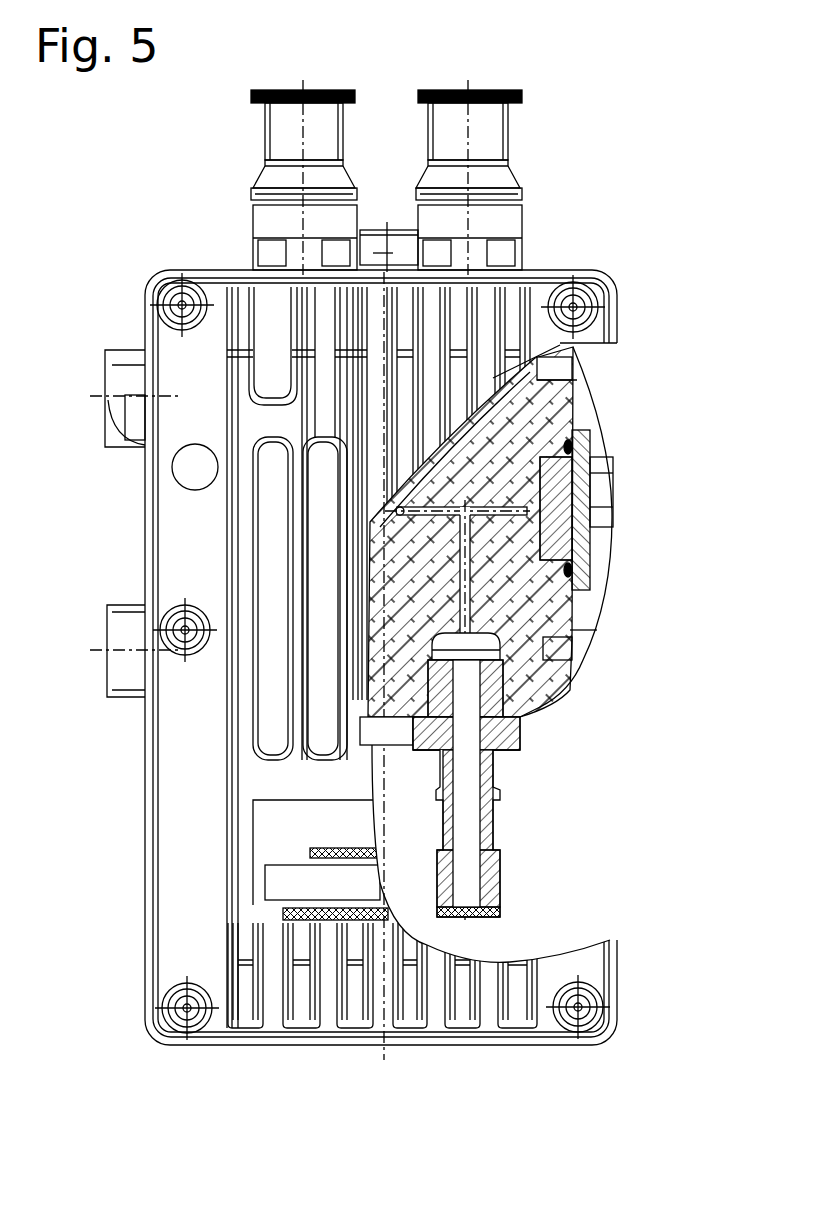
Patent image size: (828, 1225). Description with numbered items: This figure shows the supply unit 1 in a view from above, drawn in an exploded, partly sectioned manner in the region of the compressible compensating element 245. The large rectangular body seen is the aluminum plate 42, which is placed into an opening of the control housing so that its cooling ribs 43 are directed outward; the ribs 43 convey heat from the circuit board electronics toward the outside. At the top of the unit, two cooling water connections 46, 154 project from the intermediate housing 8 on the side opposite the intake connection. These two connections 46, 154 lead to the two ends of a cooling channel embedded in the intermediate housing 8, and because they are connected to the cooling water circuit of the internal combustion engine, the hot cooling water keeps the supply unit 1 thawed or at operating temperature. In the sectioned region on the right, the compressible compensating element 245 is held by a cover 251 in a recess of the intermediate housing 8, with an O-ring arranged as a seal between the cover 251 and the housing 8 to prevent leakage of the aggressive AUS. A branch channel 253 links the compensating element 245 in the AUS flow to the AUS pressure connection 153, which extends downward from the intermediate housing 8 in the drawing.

The supply unit 1 is at (396, 570).
The intermediate housing 8 is at (540, 412).
The aluminum plate 42 is at (193, 807).
The cooling ribs 43 is at (327, 505).
The cooling water connection 46 is at (278, 148).
The AUS pressure connection 153 is at (497, 733).
The cooling water connection 154 is at (492, 148).
The compressible compensating element 245 is at (575, 473).
The cover 251 is at (575, 545).
The branch channel 253 is at (503, 503).